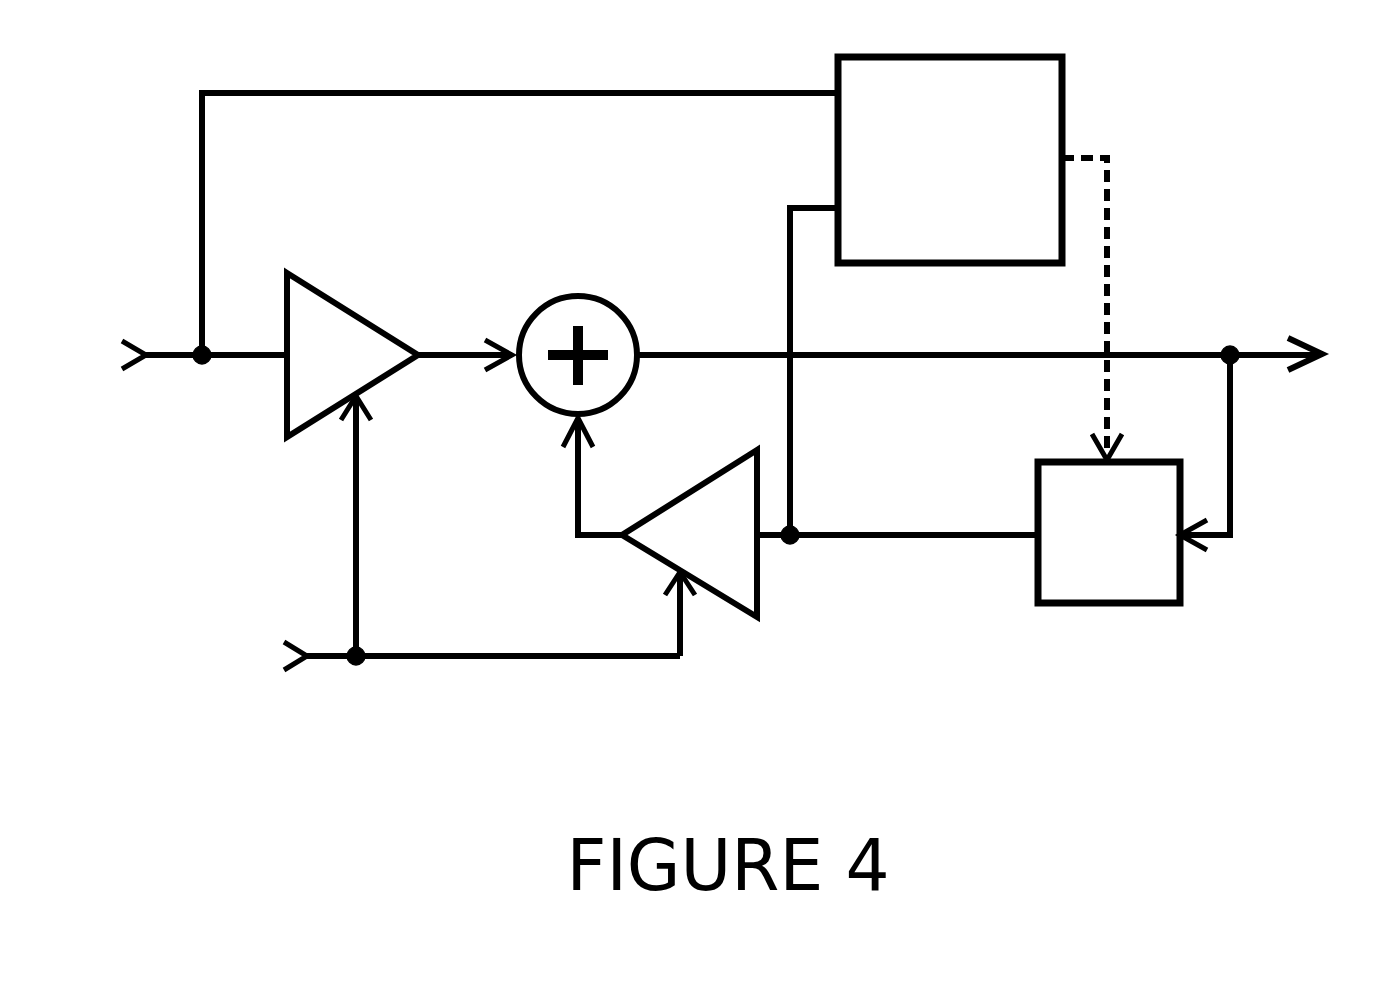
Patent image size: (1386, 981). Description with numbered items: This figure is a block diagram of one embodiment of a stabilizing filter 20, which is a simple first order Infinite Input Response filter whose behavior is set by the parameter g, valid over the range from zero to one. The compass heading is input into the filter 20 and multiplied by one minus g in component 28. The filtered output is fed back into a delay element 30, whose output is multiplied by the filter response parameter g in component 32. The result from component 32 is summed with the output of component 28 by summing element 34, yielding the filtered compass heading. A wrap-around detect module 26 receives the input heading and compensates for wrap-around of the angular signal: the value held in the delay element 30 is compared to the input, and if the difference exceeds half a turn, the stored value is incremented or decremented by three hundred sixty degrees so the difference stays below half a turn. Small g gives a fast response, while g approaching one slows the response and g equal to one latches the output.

The stabilizing filter 20 is at (474, 692).
The wrap-around detect module 26 is at (1035, 120).
The (1-g) multiplier component 28 is at (308, 394).
The delay element 30 is at (1138, 565).
The g multiplier component 32 is at (728, 562).
The summing element 34 is at (558, 320).